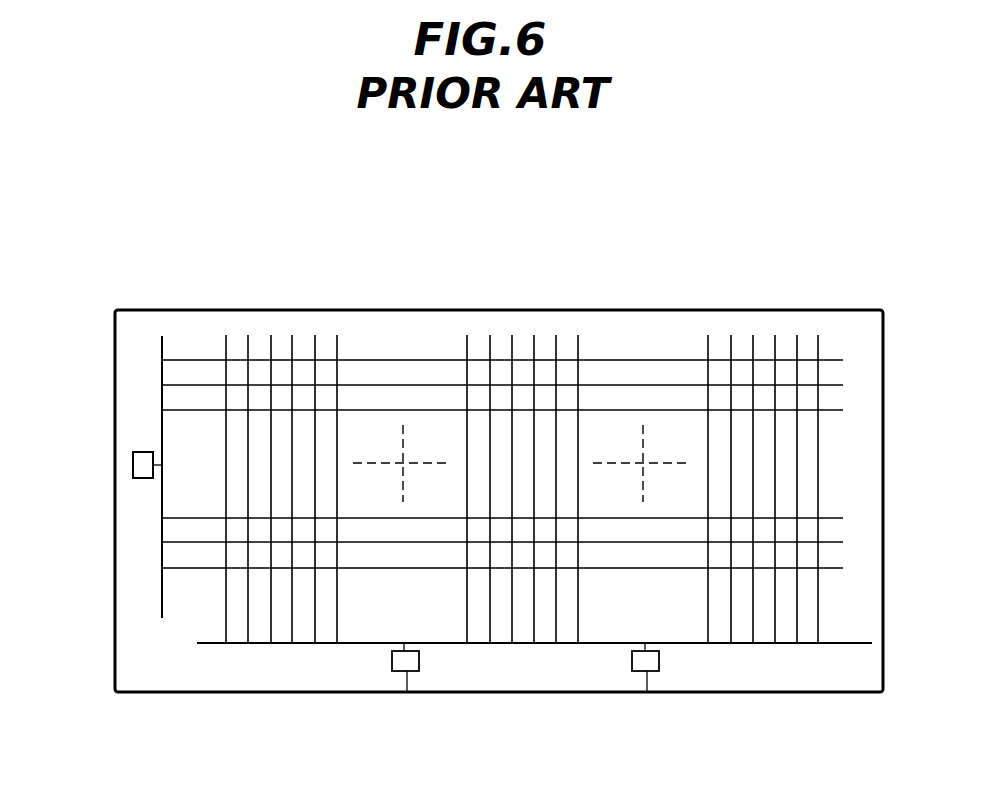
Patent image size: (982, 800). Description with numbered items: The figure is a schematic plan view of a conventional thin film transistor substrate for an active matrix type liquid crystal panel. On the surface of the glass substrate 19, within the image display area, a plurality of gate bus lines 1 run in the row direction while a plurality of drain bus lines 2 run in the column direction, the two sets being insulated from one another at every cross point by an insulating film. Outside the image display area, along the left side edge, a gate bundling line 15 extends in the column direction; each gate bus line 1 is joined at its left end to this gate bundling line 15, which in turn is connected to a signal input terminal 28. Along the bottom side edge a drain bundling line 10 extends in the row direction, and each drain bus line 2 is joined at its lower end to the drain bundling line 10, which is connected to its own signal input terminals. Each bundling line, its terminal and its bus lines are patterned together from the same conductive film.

The gate bus line 1 is at (638, 358).
The drain bus line 2 is at (819, 465).
The drain bundling line 10 is at (700, 643).
The gate bundling line 15 is at (162, 425).
The glass substrate 19 is at (835, 692).
The signal input terminal 28 is at (133, 463).